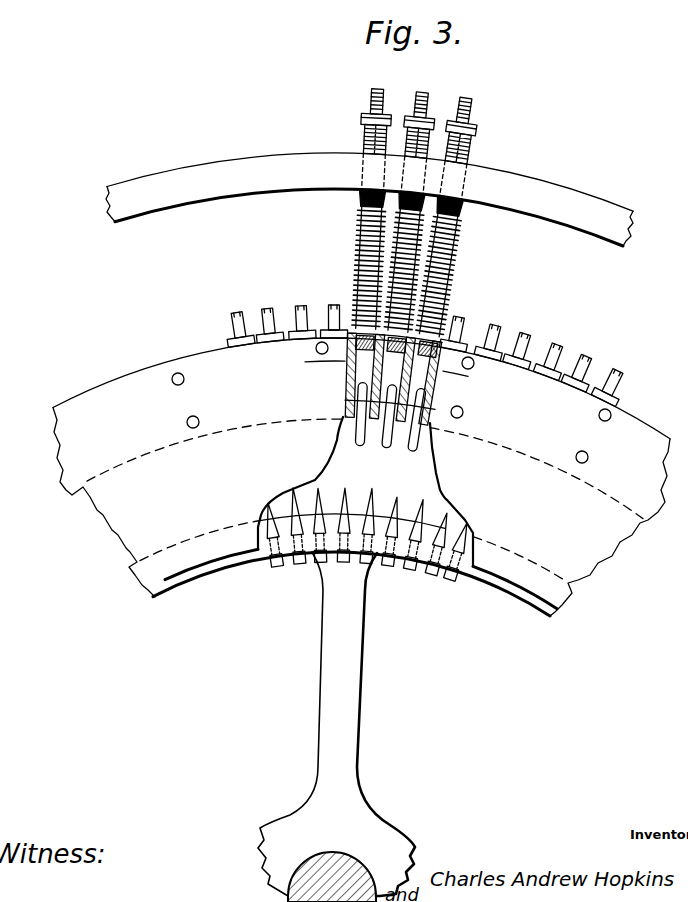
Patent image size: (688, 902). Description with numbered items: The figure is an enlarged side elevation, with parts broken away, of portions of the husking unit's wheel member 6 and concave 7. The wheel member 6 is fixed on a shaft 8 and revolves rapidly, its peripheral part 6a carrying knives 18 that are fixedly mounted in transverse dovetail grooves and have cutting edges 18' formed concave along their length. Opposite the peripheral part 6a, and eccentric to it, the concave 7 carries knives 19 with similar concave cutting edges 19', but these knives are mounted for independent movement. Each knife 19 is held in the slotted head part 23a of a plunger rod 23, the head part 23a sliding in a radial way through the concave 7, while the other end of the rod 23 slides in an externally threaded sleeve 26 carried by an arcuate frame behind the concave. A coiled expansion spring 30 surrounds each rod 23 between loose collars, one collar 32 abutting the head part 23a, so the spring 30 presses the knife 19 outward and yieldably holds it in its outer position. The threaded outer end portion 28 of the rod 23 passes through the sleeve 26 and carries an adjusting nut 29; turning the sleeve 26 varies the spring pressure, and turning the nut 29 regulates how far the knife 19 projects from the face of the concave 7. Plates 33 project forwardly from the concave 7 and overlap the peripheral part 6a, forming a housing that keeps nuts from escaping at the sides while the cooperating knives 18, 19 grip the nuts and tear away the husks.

The concave 7 is at (279, 185).
The threaded outer end portion 28 is at (462, 96).
The adjusting nut 29 is at (474, 125).
The sleeve 26 is at (466, 150).
The coiled expansion spring 30 is at (466, 268).
The plate 33 is at (361, 477).
The peripheral part 6a is at (487, 580).
The loose collar 32 is at (492, 348).
The plunger rod 23 is at (298, 311).
The head part 23a is at (434, 378).
The knife 19 is at (388, 405).
The cutting edge 19' is at (439, 430).
The knife 18 is at (345, 518).
The cutting edge 18' is at (472, 532).
The wheel member 6 is at (348, 746).
The shaft 8 is at (362, 860).